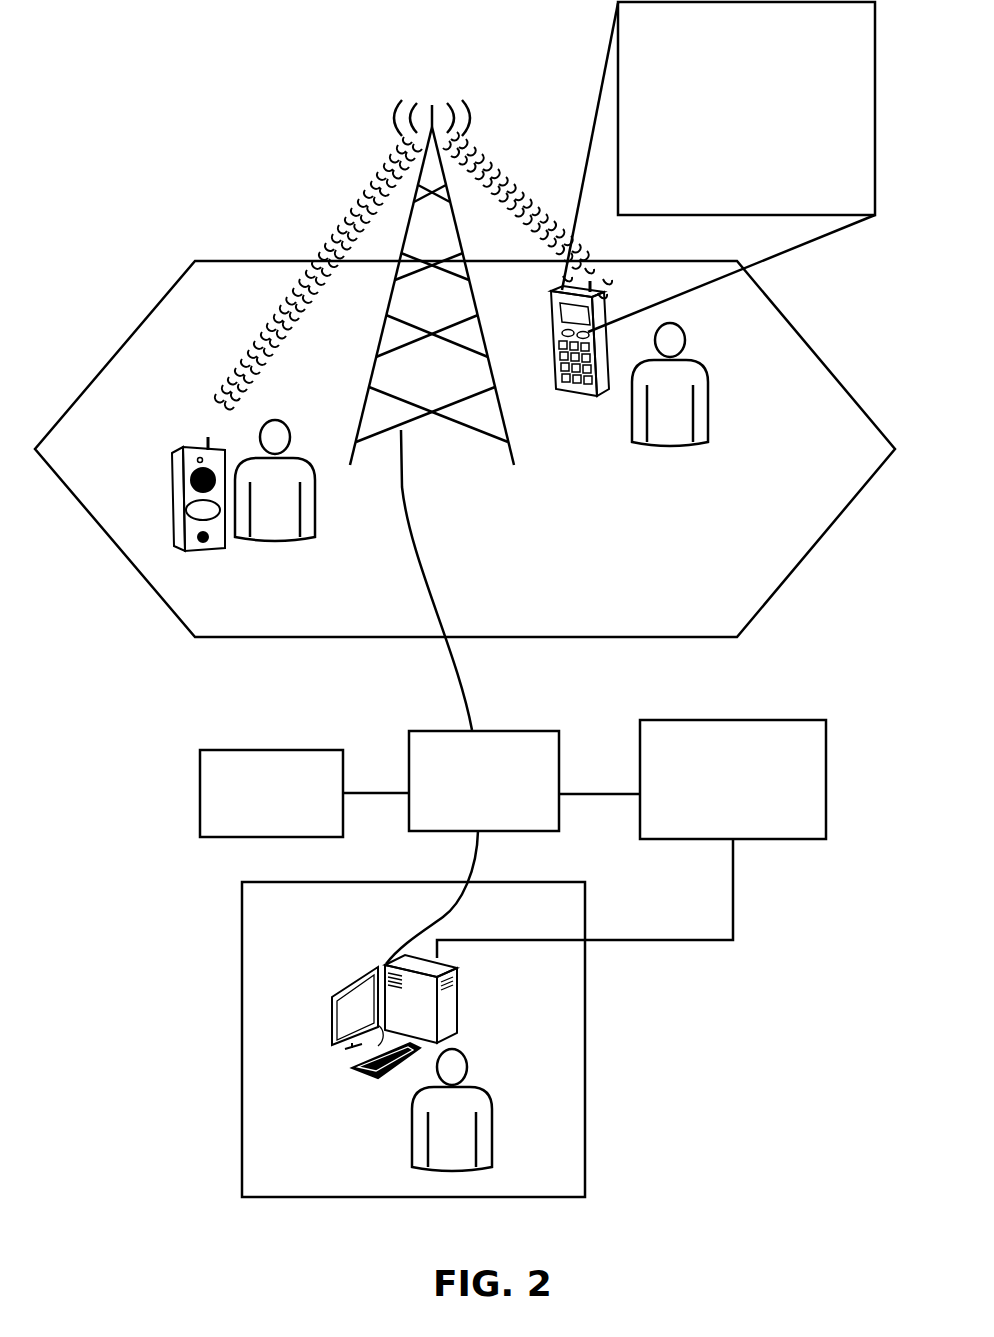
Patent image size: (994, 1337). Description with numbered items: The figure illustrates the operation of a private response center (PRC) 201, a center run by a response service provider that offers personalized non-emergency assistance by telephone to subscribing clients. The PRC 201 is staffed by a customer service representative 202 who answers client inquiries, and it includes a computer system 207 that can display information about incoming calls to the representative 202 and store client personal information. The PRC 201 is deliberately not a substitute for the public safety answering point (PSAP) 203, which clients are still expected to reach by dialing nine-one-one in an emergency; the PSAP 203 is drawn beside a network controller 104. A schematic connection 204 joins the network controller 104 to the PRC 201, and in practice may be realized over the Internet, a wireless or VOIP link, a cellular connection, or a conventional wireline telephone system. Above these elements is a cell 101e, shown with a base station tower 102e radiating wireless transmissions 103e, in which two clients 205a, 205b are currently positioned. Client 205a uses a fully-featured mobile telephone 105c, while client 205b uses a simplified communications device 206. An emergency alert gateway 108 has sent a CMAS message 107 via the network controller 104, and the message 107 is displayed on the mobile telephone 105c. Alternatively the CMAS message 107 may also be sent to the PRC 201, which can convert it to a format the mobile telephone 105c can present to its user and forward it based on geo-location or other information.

The cell 101e is at (253, 281).
The cell tower / base station 102e is at (428, 433).
The radio transmission 103e is at (407, 215).
The mobile telephone 105c is at (558, 383).
The CMAS message 107 is at (780, 202).
The client 205a is at (675, 432).
The client 205b is at (278, 530).
The simplified communications device 206 is at (190, 551).
The public safety answering point (PSAP) 203 is at (258, 750).
The network controller 104 is at (409, 758).
The emergency alert gateway 108 is at (639, 747).
The connection 204 is at (481, 849).
The private response center (PRC) 201 is at (242, 942).
The computer system 207 is at (452, 1002).
The customer service representative 202 is at (492, 1117).